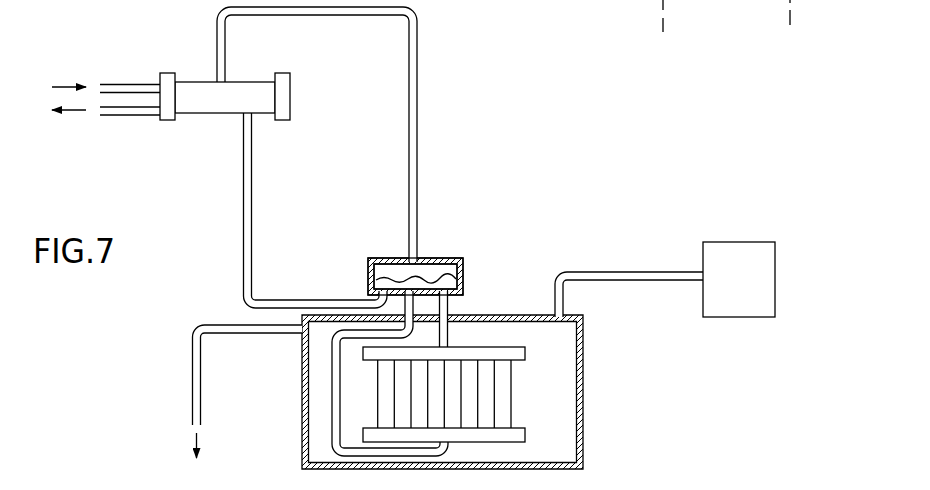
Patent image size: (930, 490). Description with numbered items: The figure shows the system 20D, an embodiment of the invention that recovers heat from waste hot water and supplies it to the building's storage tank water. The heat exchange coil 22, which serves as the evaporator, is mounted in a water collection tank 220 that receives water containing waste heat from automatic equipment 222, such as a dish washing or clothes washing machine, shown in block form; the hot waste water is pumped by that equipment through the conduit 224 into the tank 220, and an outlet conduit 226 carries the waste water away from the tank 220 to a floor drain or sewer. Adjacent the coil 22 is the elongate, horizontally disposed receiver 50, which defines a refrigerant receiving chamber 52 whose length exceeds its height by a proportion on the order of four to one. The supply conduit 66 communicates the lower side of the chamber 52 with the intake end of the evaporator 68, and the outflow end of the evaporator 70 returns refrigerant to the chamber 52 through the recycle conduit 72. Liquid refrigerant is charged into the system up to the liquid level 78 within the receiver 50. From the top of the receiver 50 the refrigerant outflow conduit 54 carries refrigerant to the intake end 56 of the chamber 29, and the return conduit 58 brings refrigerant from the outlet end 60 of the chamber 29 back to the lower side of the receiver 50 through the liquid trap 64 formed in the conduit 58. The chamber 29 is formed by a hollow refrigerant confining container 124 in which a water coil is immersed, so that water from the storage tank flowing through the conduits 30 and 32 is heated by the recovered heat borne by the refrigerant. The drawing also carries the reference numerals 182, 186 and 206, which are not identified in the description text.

The system 20D is at (451, 138).
The heat exchange coil 22 is at (524, 402).
The chamber 29 is at (292, 95).
The conduit 30 is at (121, 86).
The conduit 32 is at (127, 117).
The receiver 50 is at (467, 255).
The refrigerant receiving chamber 52 is at (386, 269).
The refrigerant outflow conduit 54 is at (418, 72).
The intake end 56 is at (215, 78).
The return conduit 58 is at (252, 218).
The outlet end 60 is at (242, 115).
The liquid trap 64 is at (240, 267).
The supply conduit 66 is at (333, 407).
The intake end of the evaporator 68 is at (448, 443).
The outflow end of the evaporator 70 is at (441, 343).
The recycle conduit 72 is at (447, 333).
The liquid level 78 is at (433, 278).
The refrigerant confining container 124 is at (257, 80).
The bottom panel 182 is at (701, 480).
The drain outlet 186 is at (259, 481).
The base 206 is at (631, 478).
The water collection tank 220 is at (584, 340).
The automatic equipment 222 is at (776, 243).
The conduit 224 is at (618, 277).
The outlet conduit 226 is at (192, 380).